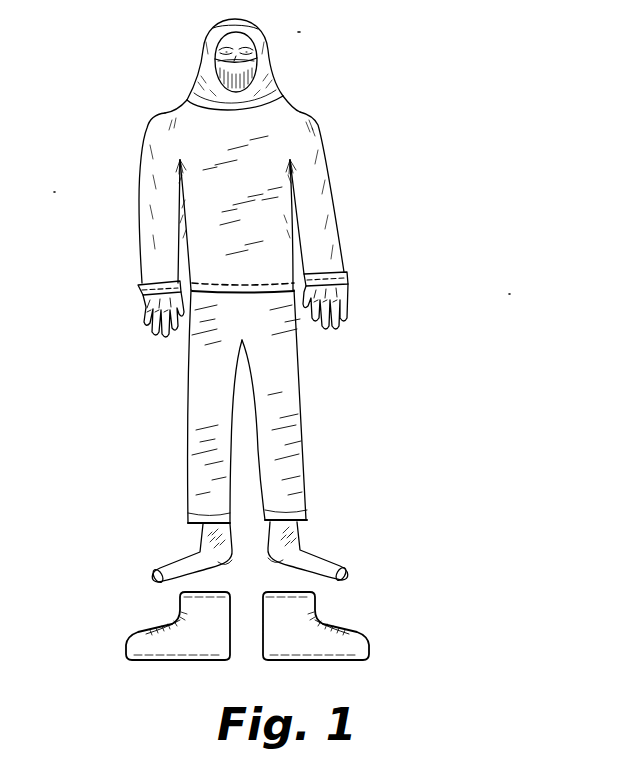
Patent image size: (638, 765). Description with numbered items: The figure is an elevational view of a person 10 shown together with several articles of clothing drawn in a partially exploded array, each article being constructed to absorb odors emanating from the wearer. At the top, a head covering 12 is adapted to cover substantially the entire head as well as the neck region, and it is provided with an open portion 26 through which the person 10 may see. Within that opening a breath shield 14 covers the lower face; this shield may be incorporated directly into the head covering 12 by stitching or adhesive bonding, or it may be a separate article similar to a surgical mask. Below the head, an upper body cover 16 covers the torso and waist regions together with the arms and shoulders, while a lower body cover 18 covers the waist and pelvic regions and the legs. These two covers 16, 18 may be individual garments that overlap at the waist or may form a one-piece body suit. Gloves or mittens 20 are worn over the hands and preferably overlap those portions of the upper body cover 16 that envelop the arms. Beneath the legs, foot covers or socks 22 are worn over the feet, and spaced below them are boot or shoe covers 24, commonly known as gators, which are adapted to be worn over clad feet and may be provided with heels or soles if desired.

The person 10 is at (98, 71).
The head covering 12 is at (268, 58).
The breath shield 14 is at (244, 78).
The upper body cover 16 is at (267, 137).
The lower body cover 18 is at (258, 417).
The gloves or mittens 20 is at (152, 300).
The foot covers or socks 22 is at (187, 555).
The boot or shoe covers 24 is at (182, 622).
The open portion 26 is at (240, 34).